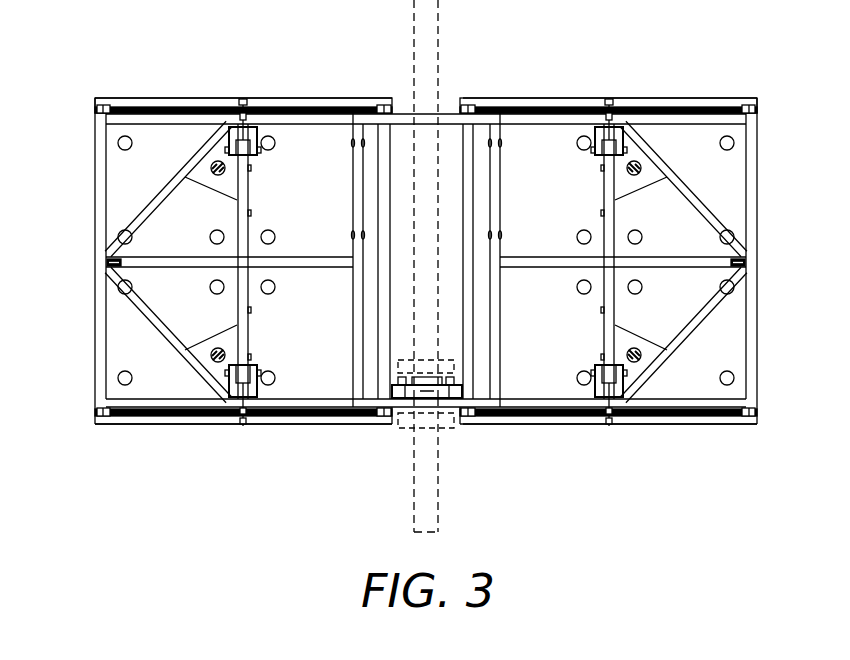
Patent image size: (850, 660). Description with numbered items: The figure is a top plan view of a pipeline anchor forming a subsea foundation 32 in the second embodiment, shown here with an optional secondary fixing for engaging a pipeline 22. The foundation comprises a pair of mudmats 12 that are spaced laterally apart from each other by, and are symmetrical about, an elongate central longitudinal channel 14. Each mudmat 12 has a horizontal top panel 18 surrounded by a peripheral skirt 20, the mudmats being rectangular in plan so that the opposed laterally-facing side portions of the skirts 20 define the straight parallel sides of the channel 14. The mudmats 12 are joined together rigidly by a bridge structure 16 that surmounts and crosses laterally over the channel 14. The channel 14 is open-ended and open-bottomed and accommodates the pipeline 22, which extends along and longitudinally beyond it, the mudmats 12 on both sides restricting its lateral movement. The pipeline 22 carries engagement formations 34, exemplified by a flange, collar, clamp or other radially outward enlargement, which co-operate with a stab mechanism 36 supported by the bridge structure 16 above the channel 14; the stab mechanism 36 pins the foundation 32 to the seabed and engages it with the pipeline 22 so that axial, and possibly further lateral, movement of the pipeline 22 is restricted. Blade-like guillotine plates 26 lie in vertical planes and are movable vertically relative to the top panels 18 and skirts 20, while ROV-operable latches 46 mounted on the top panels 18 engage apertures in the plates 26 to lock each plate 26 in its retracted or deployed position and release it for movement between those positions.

The mudmat 12 is at (70, 335).
The channel 14 is at (395, 87).
The bridge structure 16 is at (447, 113).
The top panel 18 is at (728, 174).
The skirt 20 is at (305, 428).
The pipeline 22 is at (440, 512).
The guillotine plate 26 is at (697, 107).
The subsea foundation 32 is at (88, 47).
The engagement formation 34 is at (400, 433).
The stab mechanism 36 is at (474, 371).
The ROV-operable latch 46 is at (607, 115).